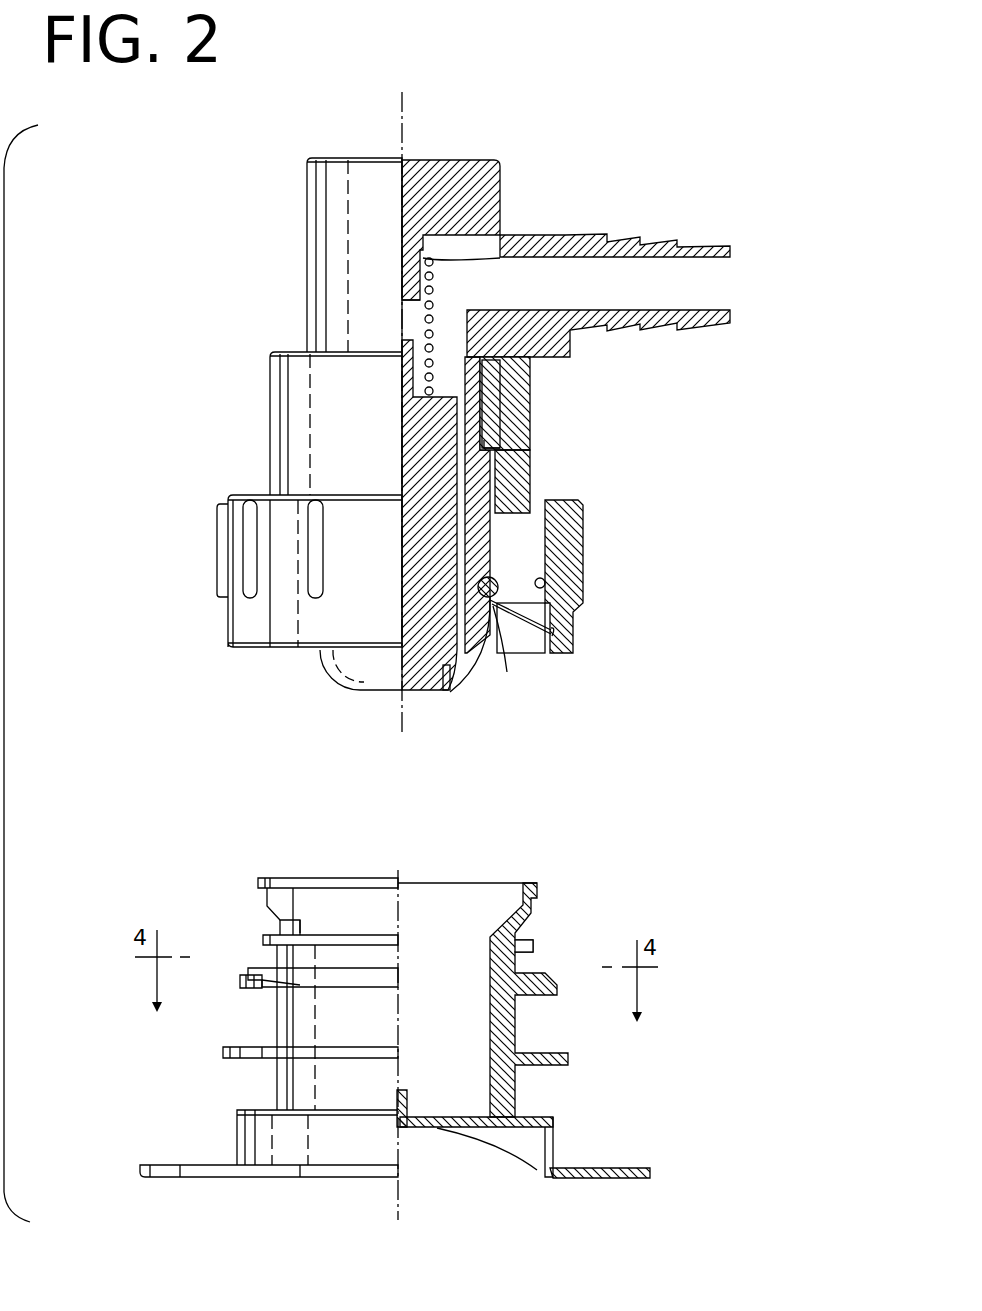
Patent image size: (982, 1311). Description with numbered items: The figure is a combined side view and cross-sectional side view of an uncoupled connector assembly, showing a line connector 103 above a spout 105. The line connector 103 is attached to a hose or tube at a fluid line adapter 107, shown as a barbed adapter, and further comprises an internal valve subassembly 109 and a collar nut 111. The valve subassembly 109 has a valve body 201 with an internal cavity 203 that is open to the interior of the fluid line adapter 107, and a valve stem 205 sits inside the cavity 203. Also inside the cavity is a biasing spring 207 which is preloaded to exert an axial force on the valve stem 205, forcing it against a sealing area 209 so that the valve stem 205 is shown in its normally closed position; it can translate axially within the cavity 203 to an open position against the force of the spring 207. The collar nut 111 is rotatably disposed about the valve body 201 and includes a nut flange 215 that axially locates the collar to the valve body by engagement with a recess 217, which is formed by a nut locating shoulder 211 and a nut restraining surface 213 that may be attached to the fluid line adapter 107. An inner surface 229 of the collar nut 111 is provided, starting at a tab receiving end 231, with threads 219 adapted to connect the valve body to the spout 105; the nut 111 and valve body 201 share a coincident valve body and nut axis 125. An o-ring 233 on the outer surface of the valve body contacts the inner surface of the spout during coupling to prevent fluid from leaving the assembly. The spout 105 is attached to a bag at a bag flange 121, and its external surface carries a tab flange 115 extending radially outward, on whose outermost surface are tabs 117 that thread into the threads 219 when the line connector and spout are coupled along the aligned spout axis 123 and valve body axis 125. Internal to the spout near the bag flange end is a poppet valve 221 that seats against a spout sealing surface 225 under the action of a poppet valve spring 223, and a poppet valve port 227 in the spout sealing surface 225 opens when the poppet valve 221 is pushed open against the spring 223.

The line connector 103 is at (275, 290).
The spout 105 is at (150, 1056).
The fluid line adapter 107 is at (726, 248).
The internal valve subassembly 109 is at (502, 168).
The collar nut 111 is at (545, 585).
The tab flange 115 is at (270, 995).
The tab 117 is at (240, 981).
The bag flange 121 is at (160, 1172).
The spout axis 123 is at (404, 1190).
The valve body and nut axis 125 is at (406, 708).
The valve body 201 is at (478, 520).
The internal cavity 203 is at (440, 540).
The valve stem 205 is at (440, 560).
The biasing spring 207 is at (512, 237).
The sealing area 209 is at (450, 688).
The nut locating shoulder 211 is at (495, 456).
The nut restraining surface 213 is at (543, 358).
The nut flange 215 is at (500, 430).
The recess 217 is at (478, 410).
The thread 219 is at (556, 650).
The poppet valve 221 is at (402, 1110).
The poppet valve spring 223 is at (510, 1165).
The spout sealing surface 225 is at (468, 1117).
The poppet valve port 227 is at (410, 1115).
The inner surface 229 is at (548, 600).
The tab receiving end 231 is at (250, 650).
The o-ring 233 is at (508, 672).